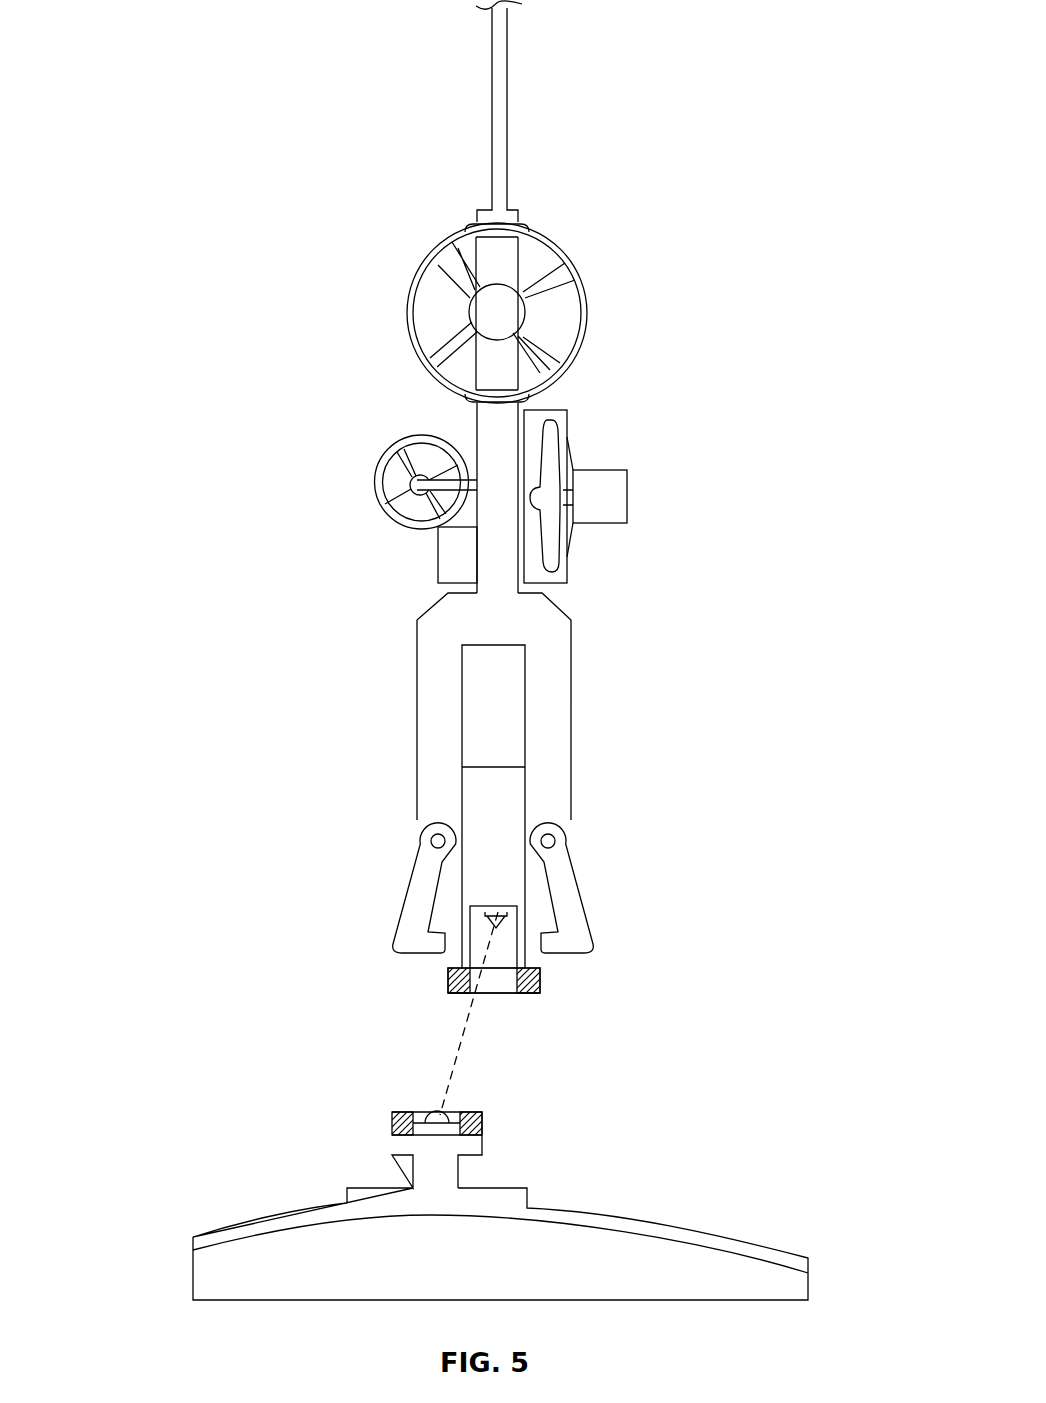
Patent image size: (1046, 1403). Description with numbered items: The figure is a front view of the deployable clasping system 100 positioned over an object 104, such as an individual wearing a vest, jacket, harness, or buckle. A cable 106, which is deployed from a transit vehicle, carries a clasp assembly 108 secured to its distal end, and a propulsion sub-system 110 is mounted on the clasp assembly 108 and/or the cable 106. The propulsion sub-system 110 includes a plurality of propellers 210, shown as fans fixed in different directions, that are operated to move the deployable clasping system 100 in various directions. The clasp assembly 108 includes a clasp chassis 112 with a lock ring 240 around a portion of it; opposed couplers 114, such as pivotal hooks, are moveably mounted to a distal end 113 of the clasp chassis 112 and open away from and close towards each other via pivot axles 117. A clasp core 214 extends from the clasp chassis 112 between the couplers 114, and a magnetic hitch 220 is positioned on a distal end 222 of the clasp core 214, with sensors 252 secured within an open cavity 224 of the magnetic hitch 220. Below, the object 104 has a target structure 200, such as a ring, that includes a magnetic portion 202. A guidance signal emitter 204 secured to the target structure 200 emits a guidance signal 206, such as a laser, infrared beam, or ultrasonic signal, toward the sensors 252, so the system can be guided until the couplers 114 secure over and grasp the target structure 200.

The deployable clasping system 100 is at (303, 266).
The object 104 is at (198, 1268).
The cable 106 is at (508, 137).
The clasp assembly 108 is at (601, 647).
The propulsion sub-system 110 is at (625, 288).
The clasp chassis 112 is at (568, 677).
The distal end 113 is at (568, 807).
The couplers 114 is at (402, 893).
The pivot axles 117 is at (438, 841).
The target structure 200 is at (444, 1123).
The magnetic portion 202 is at (482, 1125).
The guidance signal emitter 204 is at (447, 1110).
The guidance signal 206 is at (458, 1045).
The propellers 210 is at (537, 353).
The clasp core 214 is at (488, 800).
The magnetic hitch 220 is at (531, 995).
The distal end 222 is at (531, 963).
The open cavity 224 is at (500, 950).
The lock ring 240 is at (572, 757).
The sensors 252 is at (488, 916).